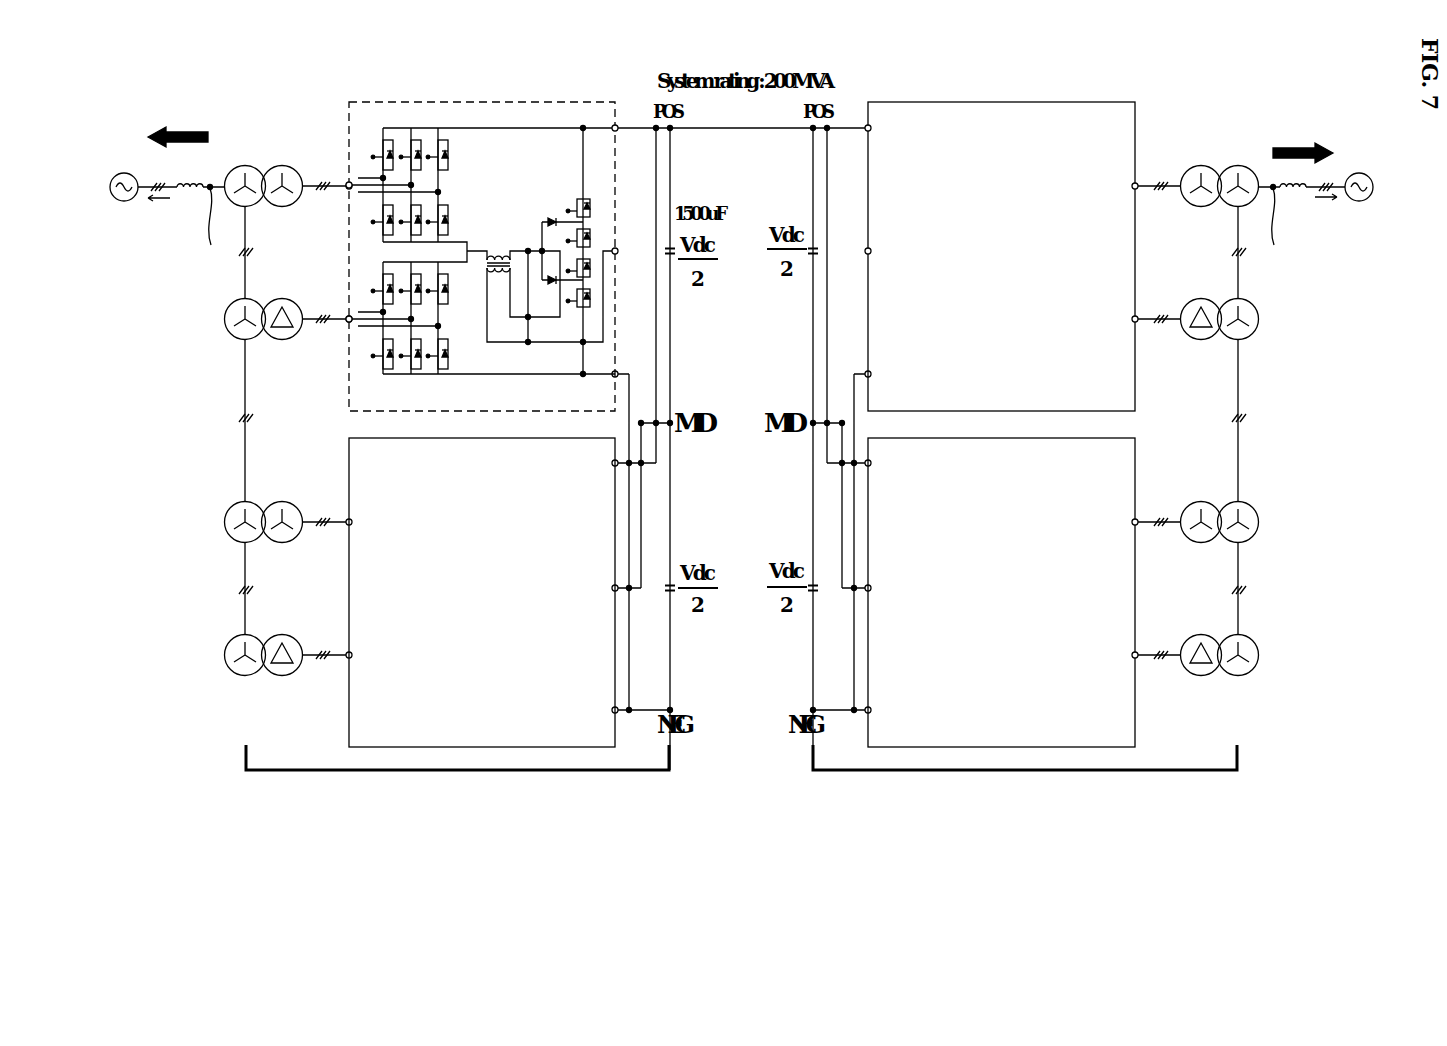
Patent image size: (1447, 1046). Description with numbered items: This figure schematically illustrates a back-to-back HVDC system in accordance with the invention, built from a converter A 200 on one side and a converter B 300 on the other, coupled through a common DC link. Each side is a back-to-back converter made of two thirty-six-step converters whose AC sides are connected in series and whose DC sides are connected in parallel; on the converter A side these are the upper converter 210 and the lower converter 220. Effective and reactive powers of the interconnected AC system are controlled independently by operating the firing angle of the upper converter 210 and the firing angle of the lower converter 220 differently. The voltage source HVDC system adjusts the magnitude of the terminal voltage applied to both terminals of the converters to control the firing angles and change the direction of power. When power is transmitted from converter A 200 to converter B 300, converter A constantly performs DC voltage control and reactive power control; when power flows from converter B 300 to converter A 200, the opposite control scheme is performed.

The converter A 200 is at (458, 826).
The upper converter 210 is at (590, 102).
The lower converter 220 is at (592, 771).
The converter B 300 is at (1040, 826).